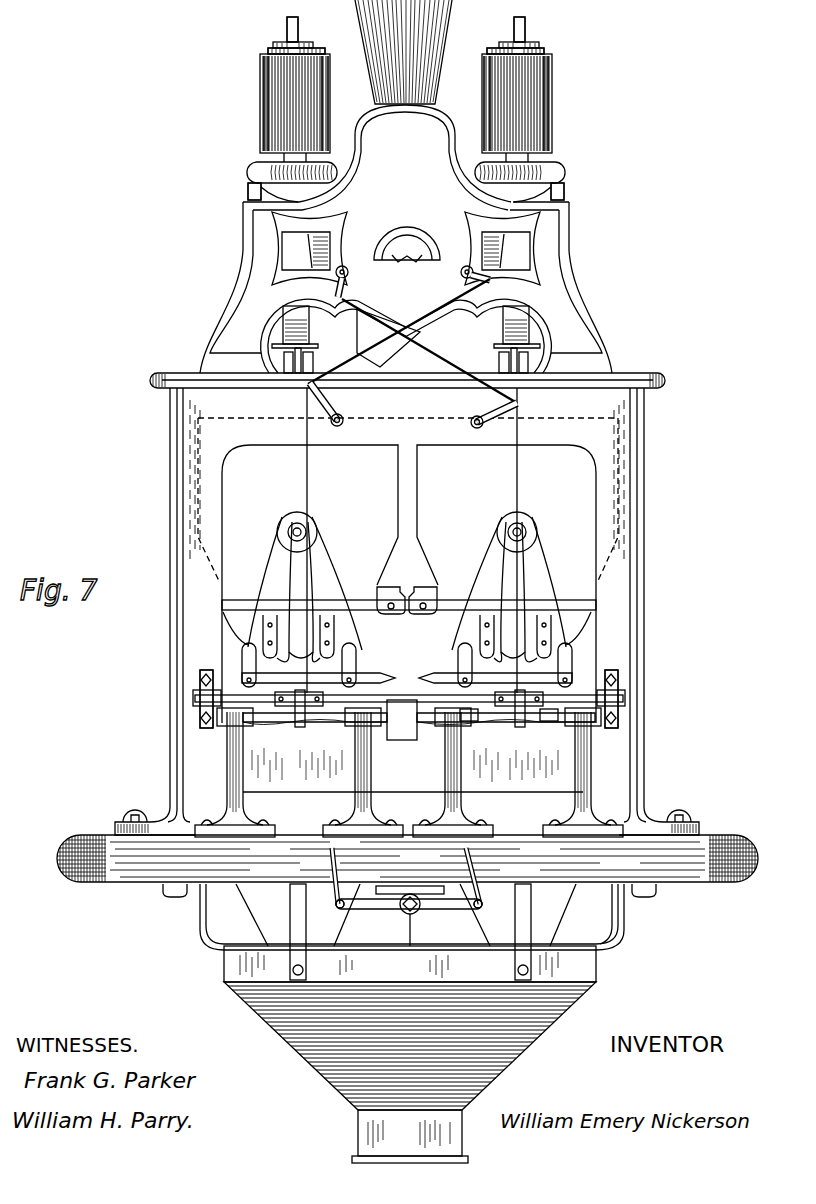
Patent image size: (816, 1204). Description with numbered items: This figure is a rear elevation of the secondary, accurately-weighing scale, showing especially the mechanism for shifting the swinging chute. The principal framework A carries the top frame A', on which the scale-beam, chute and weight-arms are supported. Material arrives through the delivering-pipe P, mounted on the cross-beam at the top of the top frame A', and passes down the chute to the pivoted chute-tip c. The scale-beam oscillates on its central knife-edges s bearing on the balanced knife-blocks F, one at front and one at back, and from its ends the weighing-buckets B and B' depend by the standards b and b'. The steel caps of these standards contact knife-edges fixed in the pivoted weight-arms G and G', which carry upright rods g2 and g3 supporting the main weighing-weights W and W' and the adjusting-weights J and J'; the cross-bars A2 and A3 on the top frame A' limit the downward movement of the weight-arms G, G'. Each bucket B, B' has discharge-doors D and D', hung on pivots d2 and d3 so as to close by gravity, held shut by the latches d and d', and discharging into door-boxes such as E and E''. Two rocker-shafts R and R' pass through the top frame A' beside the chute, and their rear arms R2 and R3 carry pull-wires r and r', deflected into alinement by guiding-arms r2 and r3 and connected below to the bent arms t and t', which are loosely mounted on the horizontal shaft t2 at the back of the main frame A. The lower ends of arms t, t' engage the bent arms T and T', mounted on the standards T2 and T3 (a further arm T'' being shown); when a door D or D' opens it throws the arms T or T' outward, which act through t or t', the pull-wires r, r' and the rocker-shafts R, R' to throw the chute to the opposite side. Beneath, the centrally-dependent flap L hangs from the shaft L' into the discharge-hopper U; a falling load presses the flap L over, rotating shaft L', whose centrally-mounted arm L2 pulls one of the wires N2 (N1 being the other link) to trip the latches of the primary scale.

The delivering-pipe P is at (452, 20).
The principal framework A is at (407, 604).
The top frame A' is at (407, 239).
The cross-bar A2 is at (248, 193).
The cross-bar A3 is at (564, 193).
The main weighing-weight W is at (280, 89).
The main weighing-weight W' is at (530, 89).
The adjusting-weights J is at (267, 44).
The adjusting-weights J' is at (516, 40).
The upright rod g2 is at (287, 30).
The upright rod g3 is at (525, 30).
The weight-arm G is at (281, 179).
The weight-arm G' is at (533, 182).
The knife-edges s is at (407, 248).
The knife-blocks F is at (408, 258).
The rocker-shaft R is at (346, 259).
The arm R2 is at (346, 292).
The rocker-shaft R' is at (462, 259).
The arm R3 is at (490, 284).
The standard b is at (299, 339).
The standard b' is at (512, 339).
The chute-tip c is at (412, 341).
The pull-wire r is at (315, 540).
The pull-wire r' is at (527, 540).
The guiding-arm r2 is at (333, 404).
The guiding-arm r3 is at (484, 425).
The weighing-bucket B is at (310, 584).
The weighing-bucket B' is at (506, 584).
The pivots d2 is at (302, 531).
The pivots d3 is at (522, 531).
The discharge-doors D is at (264, 602).
The discharge-doors D' is at (546, 602).
The latches d is at (320, 670).
The latches d' is at (495, 670).
The bent arm t is at (409, 716).
The horizontal shaft t2 is at (218, 699).
The bent arm t' is at (556, 728).
The bent arms T is at (328, 772).
The standards T2 is at (231, 770).
The standards T3 is at (450, 777).
The bent arms T' is at (476, 739).
The bearing T'' is at (544, 739).
The door-box E is at (407, 892).
The base bracket E'' is at (587, 914).
The link N1 is at (330, 856).
The wires N2 is at (472, 860).
The centrally-dependent flap L is at (409, 920).
The shaft L' is at (362, 919).
The centrally-mounted arm L2 is at (470, 908).
The discharge-hopper U is at (270, 1022).